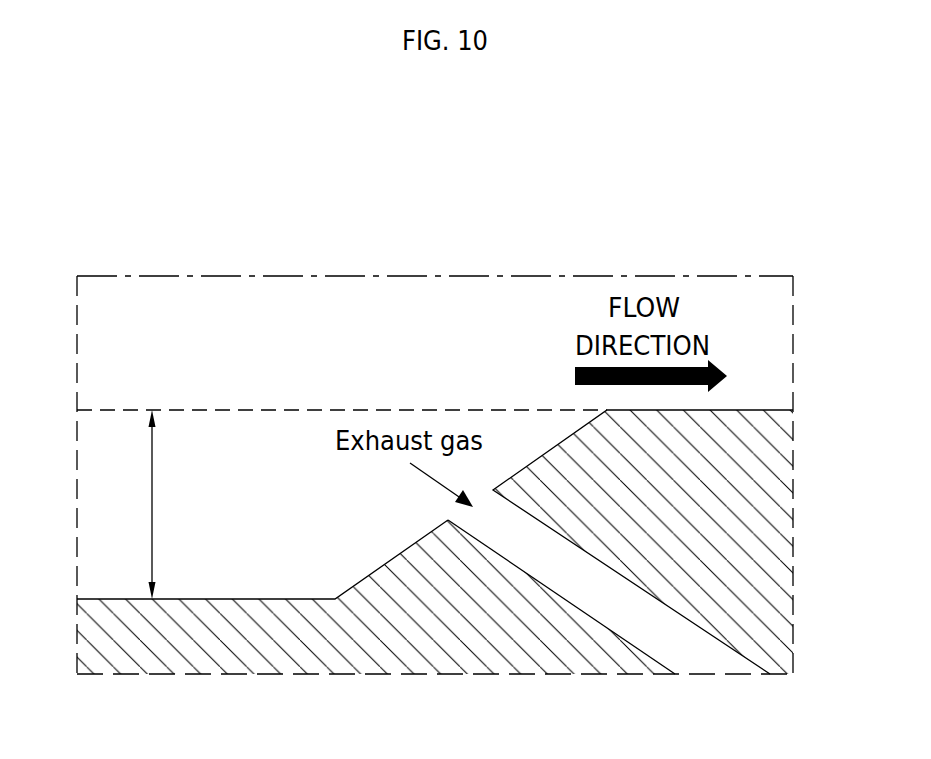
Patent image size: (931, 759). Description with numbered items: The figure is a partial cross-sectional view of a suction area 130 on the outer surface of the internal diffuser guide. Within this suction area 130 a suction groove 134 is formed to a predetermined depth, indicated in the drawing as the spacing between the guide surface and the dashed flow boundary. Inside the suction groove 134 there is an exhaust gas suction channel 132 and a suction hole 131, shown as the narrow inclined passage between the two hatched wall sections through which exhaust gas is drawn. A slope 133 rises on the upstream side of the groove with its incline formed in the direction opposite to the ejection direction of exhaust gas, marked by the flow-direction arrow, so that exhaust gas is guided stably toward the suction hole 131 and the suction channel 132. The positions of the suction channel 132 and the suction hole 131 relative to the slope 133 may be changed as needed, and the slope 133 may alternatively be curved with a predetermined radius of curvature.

The suction area 130 is at (462, 184).
The suction hole 131 is at (508, 514).
The exhaust gas suction channel 132 is at (646, 619).
The slope 133 is at (372, 572).
The suction groove 134 is at (257, 479).